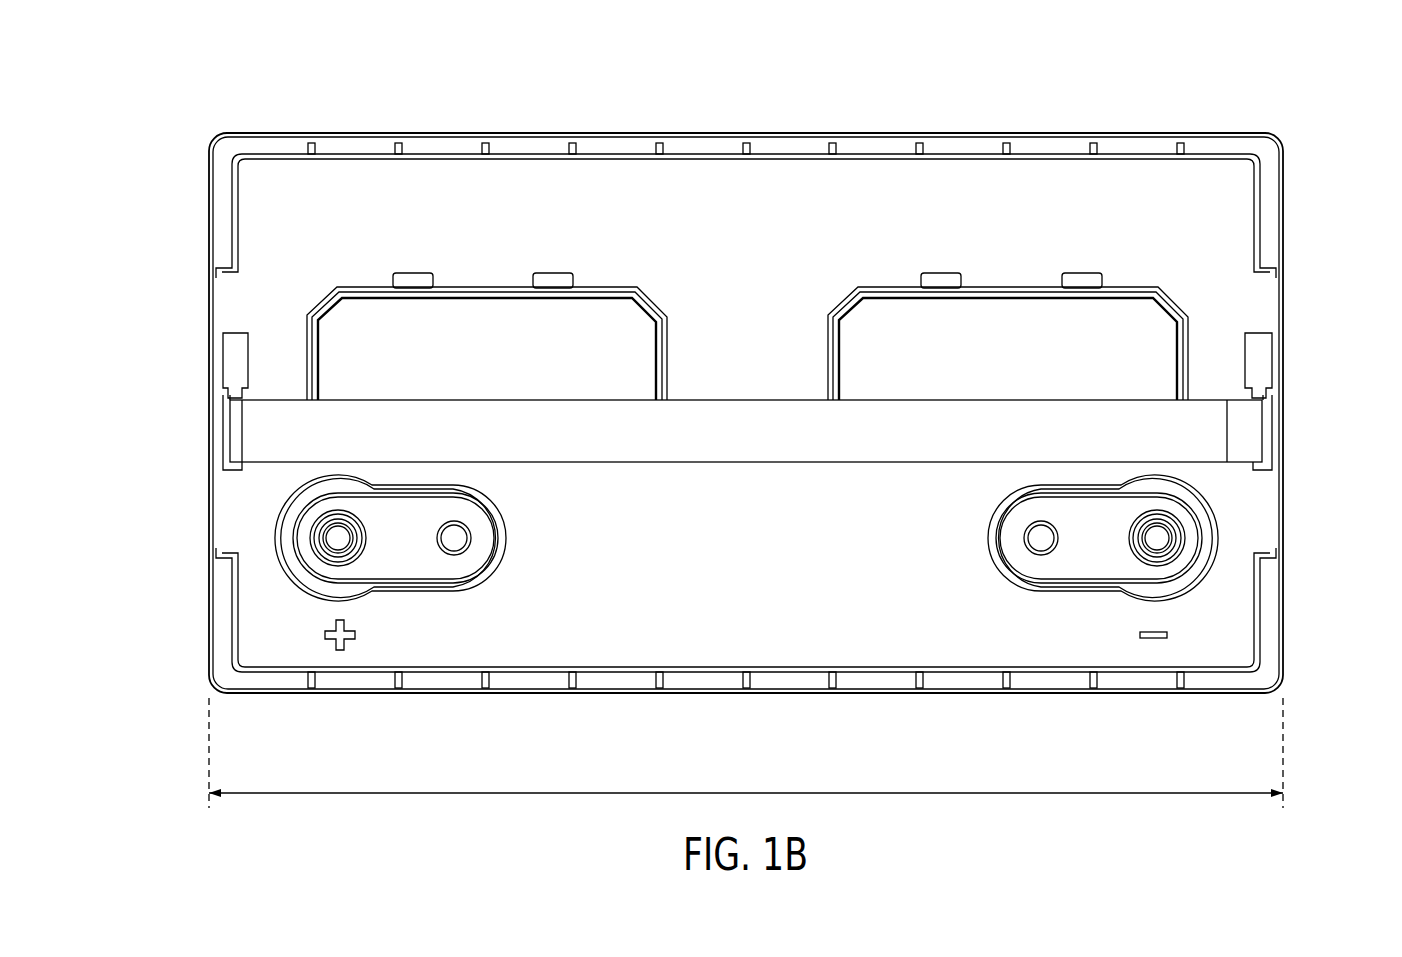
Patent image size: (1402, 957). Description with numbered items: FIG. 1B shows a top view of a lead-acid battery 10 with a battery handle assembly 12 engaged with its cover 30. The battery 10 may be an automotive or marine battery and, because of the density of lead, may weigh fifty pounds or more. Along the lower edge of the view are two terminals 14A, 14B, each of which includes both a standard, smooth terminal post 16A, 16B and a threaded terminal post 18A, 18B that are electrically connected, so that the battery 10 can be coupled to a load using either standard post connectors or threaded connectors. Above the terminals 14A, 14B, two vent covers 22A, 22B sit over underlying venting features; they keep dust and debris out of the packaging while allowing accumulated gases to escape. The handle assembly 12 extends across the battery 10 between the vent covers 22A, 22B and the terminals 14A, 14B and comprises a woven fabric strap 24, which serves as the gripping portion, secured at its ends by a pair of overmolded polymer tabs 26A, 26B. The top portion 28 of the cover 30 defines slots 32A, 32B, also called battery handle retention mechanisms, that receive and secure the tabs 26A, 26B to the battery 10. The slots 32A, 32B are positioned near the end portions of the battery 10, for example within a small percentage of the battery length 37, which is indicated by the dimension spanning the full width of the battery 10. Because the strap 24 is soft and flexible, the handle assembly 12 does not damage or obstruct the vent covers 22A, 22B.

The lead-acid battery 10 is at (1180, 88).
The battery handle assembly 12 is at (728, 388).
The terminal 14A is at (402, 582).
The terminal 14B is at (1091, 582).
The smooth terminal post 16A is at (338, 540).
The smooth terminal post 16B is at (1157, 540).
The threaded terminal post 18A is at (455, 540).
The threaded terminal post 18B is at (1041, 540).
The vent cover 22A is at (427, 340).
The vent cover 22B is at (1000, 346).
The woven fabric strap 24 is at (715, 442).
The overmolded polymer tab 26A is at (227, 418).
The overmolded polymer tab 26B is at (1265, 418).
The top portion 28 is at (609, 212).
The cover 30 is at (443, 183).
The slot 32A is at (212, 359).
The slot 32B is at (1283, 359).
The length 37 is at (748, 793).